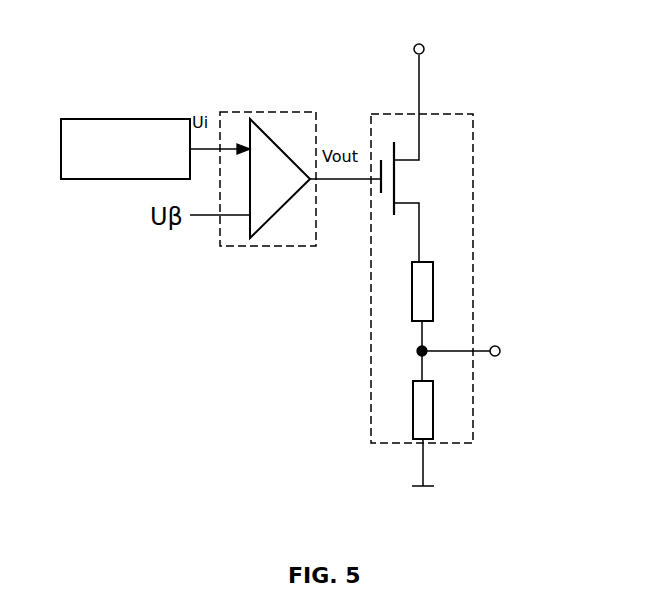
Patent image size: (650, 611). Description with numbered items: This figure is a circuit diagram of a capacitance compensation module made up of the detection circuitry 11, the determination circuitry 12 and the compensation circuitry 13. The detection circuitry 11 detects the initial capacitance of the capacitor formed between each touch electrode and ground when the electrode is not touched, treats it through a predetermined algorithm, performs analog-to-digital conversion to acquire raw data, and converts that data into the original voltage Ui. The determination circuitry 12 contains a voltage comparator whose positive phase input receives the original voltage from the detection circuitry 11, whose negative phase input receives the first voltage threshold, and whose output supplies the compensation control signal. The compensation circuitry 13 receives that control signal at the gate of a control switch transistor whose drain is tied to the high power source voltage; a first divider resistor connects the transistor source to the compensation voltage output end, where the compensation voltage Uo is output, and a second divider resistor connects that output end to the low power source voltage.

The detection circuitry 11 is at (178, 88).
The determination circuitry 12 is at (318, 88).
The compensation circuitry 13 is at (402, 113).